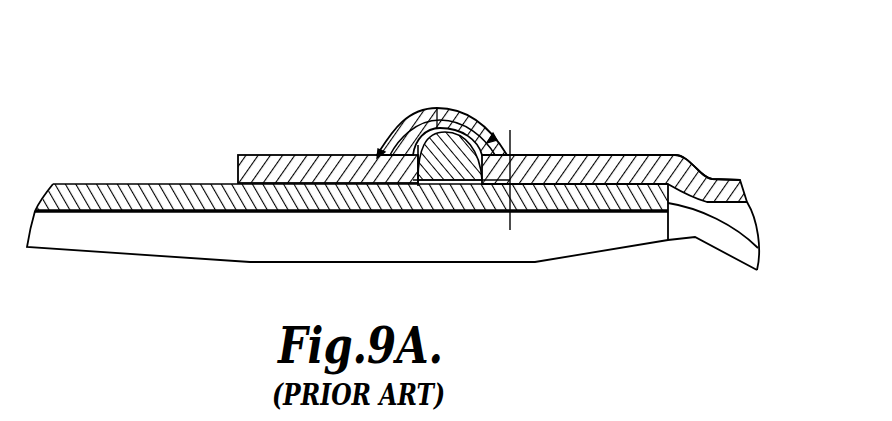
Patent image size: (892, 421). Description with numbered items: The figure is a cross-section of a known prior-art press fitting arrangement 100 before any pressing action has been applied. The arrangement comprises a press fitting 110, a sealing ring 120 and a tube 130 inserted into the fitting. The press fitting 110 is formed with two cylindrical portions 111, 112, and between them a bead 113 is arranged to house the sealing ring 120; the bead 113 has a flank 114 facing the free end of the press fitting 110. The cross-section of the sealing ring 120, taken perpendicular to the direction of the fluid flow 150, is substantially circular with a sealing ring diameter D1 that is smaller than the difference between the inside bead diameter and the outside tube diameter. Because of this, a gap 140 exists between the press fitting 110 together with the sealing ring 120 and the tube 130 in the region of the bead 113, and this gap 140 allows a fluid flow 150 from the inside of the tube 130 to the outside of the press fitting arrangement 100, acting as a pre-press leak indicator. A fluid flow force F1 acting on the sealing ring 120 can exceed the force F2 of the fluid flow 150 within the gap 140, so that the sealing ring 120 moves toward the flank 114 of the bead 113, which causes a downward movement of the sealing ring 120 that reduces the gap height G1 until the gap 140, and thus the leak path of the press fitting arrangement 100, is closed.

The press fitting arrangement 100 is at (283, 72).
The press fitting 110 is at (713, 173).
The cylindrical portion 111 is at (272, 155).
The cylindrical portion 112 is at (628, 155).
The bead 113 is at (418, 112).
The flank 114 is at (383, 150).
The sealing ring 120 is at (476, 126).
The tube 130 is at (180, 184).
The gap 140 is at (288, 184).
The fluid flow 150 is at (438, 184).
The sealing ring diameter D1 is at (437, 110).
The fluid flow force F1 is at (490, 140).
The force F2 is at (377, 155).
The gap height G1 is at (510, 135).